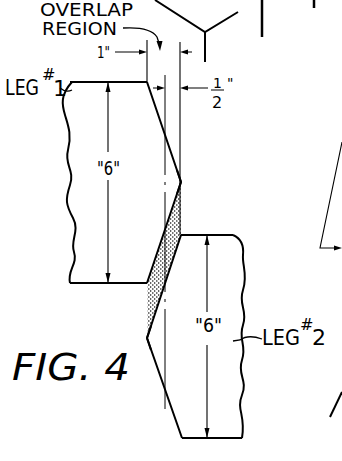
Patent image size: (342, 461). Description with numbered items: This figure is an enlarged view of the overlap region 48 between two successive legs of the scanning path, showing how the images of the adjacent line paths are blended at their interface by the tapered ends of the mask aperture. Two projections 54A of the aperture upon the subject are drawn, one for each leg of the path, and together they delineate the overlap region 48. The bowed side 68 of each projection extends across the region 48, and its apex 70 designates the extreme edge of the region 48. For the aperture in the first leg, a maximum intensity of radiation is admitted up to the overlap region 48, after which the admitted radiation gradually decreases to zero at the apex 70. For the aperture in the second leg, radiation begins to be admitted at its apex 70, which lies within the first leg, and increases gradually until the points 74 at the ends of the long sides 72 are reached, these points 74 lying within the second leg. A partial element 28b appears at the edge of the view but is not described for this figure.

The projection of aperture 54A is at (153, 203).
The overlap region 48 is at (183, 200).
The bowed side 68 is at (157, 254).
The apex 70 is at (182, 181).
The long side 72 is at (115, 284).
The point 74 is at (168, 274).
The connecting member 28b is at (199, 22).